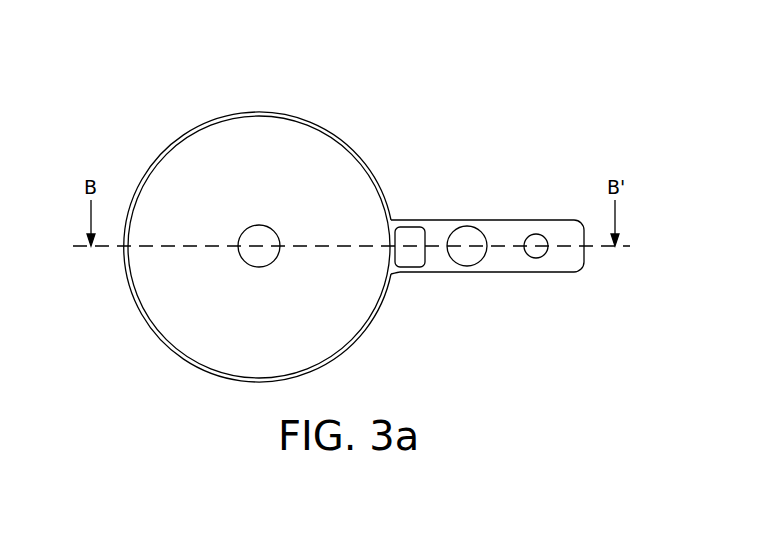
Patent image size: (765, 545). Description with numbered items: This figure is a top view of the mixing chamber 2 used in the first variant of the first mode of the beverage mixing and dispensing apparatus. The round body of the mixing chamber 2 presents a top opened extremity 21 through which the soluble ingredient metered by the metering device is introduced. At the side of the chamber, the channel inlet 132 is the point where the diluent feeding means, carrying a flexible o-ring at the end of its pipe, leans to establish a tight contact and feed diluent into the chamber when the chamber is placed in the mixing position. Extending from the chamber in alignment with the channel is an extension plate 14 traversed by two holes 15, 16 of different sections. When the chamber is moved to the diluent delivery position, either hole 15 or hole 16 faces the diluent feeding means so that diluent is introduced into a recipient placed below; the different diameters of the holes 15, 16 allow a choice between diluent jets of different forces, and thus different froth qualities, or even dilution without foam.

The mixing chamber 2 is at (259, 111).
The top opened extremity 21 is at (343, 148).
The extension plate 14 is at (510, 228).
The channel inlet 132 is at (413, 232).
The hole 15 is at (467, 262).
The hole 16 is at (537, 255).